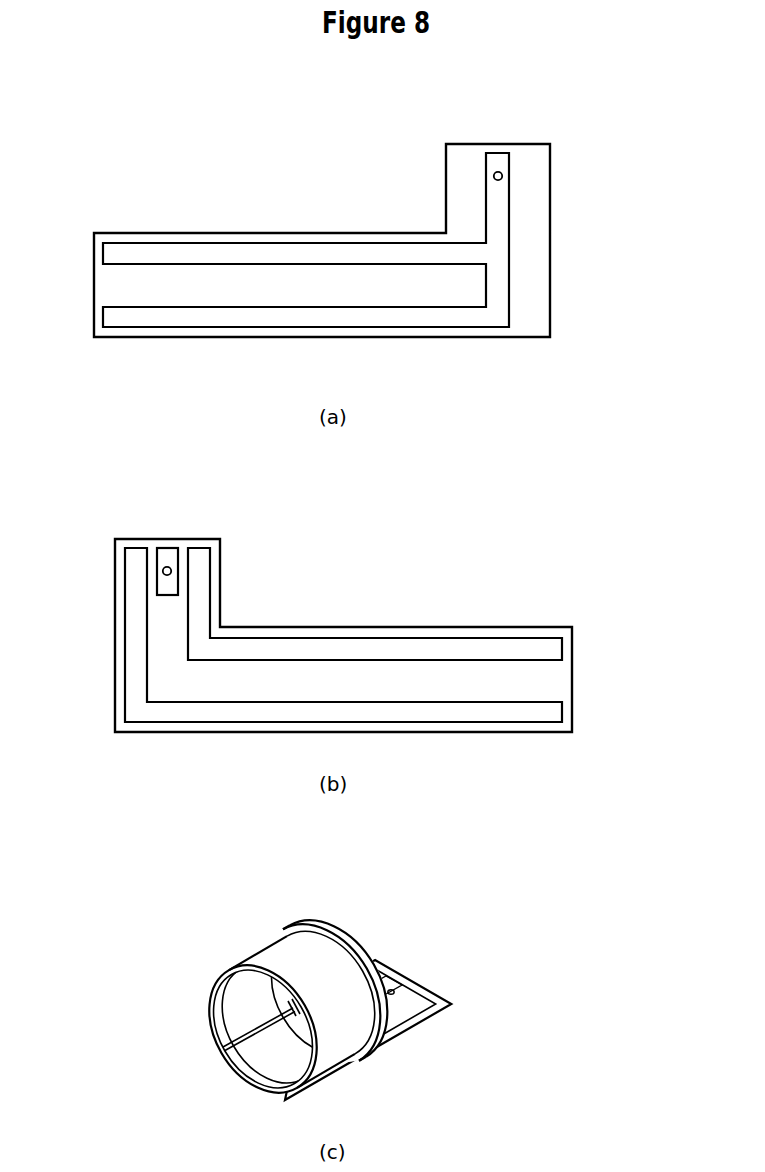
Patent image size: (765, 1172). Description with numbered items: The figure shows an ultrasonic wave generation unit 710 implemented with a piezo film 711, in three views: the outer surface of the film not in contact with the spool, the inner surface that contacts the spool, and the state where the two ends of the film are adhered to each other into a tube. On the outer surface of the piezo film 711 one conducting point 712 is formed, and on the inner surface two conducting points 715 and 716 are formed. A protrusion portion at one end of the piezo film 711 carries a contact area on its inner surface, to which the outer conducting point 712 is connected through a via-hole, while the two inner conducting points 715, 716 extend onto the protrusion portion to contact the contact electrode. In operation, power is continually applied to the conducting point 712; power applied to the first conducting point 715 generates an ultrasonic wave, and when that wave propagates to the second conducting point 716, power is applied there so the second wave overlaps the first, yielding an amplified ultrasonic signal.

The ultrasonic wave generation unit 710 is at (577, 127).
The piezo film 711 is at (532, 290).
The conducting point 712 is at (494, 255).
The first conducting point 715 is at (548, 651).
The second conducting point 716 is at (550, 712).